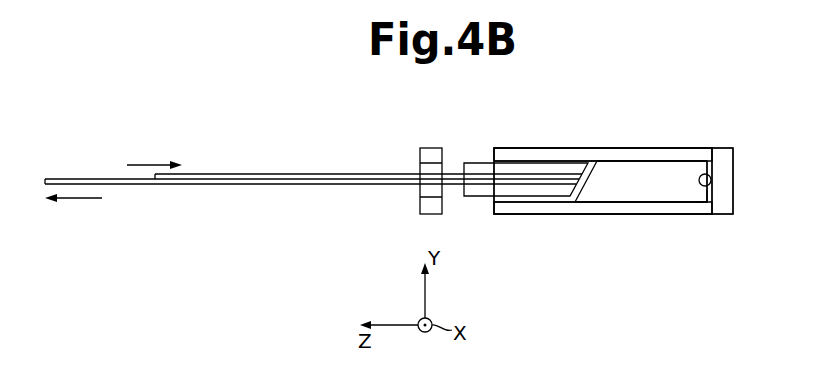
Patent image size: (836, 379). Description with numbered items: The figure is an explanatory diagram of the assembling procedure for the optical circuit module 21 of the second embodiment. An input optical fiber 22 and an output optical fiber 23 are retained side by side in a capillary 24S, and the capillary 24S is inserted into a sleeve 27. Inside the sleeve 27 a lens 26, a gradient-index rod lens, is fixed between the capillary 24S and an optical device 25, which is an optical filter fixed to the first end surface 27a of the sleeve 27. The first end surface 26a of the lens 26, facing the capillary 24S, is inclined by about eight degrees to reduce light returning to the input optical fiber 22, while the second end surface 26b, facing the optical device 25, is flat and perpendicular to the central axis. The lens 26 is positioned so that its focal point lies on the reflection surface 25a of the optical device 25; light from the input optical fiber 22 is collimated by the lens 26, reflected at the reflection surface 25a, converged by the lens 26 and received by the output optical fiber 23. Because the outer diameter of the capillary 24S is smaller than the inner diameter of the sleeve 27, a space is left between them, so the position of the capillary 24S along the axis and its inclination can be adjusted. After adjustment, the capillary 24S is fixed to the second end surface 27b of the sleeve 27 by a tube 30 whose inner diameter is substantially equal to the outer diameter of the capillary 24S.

The optical circuit module 21 is at (648, 135).
The input optical fiber 22 is at (267, 173).
The output optical fiber 23 is at (213, 188).
The capillary 24S is at (472, 165).
The optical device 25 is at (733, 152).
The reflection surface 25a is at (712, 180).
The lens 26 is at (617, 192).
The first end surface of the lens 26a is at (593, 160).
The second end surface of the lens 26b is at (707, 202).
The sleeve 27 is at (537, 147).
The first end surface of the sleeve 27a is at (720, 147).
The second end surface of the sleeve 27b is at (494, 210).
The tube 30 is at (428, 147).